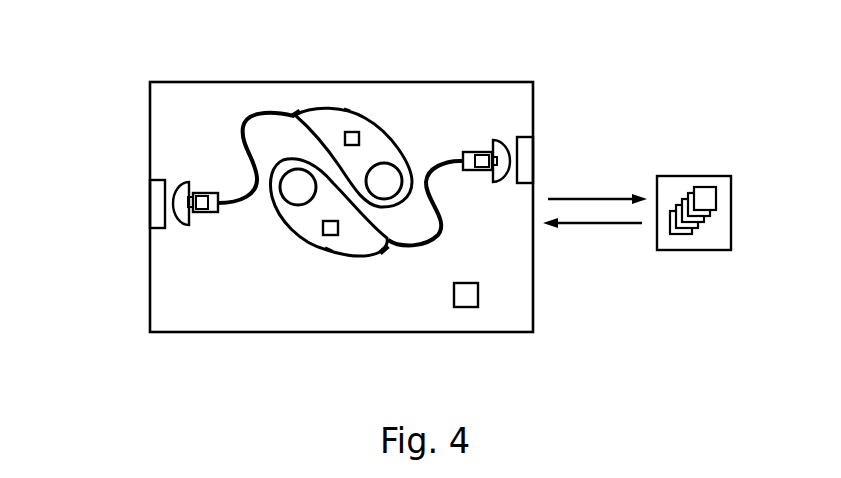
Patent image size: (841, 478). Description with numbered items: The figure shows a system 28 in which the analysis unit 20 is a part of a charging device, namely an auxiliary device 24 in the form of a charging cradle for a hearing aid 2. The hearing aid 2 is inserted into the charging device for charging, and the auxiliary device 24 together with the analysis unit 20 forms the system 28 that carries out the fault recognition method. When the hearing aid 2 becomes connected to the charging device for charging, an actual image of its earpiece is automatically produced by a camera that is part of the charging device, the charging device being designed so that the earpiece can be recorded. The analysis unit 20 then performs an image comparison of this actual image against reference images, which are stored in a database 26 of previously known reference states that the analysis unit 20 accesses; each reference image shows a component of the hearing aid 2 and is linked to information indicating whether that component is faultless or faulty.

The system 28 is at (106, 120).
The hearing aid 2 is at (216, 147).
The auxiliary device 24 is at (470, 82).
The analysis unit 20 is at (478, 302).
The database 26 is at (710, 250).